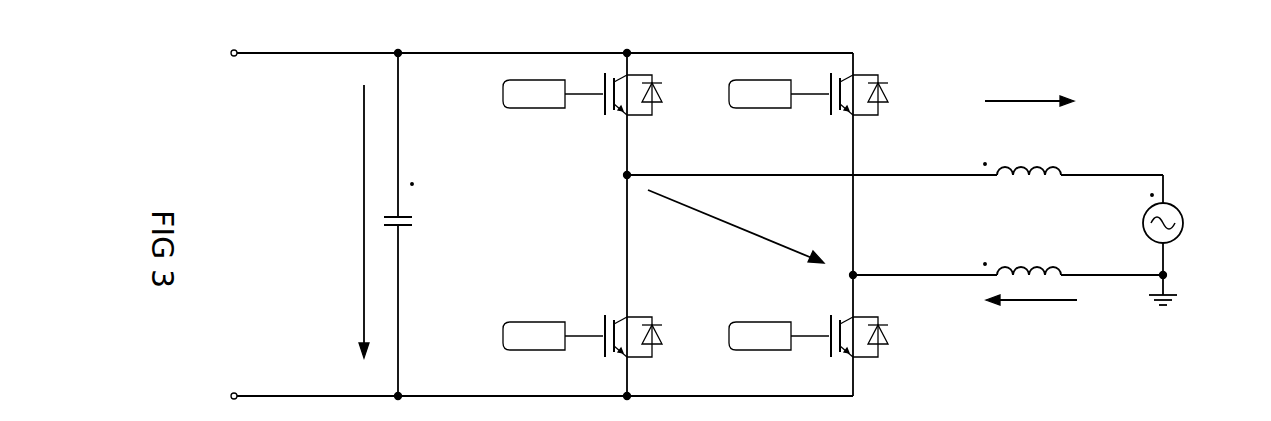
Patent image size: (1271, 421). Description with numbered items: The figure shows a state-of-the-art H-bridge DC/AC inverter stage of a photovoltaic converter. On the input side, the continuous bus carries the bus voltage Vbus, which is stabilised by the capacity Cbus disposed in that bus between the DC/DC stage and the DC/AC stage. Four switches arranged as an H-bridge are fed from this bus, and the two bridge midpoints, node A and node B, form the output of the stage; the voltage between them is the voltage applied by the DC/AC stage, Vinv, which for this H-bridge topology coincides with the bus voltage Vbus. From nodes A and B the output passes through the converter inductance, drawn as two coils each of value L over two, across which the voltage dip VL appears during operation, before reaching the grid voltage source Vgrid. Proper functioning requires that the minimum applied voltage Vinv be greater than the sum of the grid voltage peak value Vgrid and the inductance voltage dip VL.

The bus voltage Vbus is at (332, 221).
The capacity Cbus is at (432, 224).
The inverter output node A is at (793, 174).
The inverter output node B is at (924, 264).
The voltage applied by the DC/AC inverter output stage Vinv is at (736, 231).
The coil L is at (1073, 203).
The voltage dip during converter inductance VL is at (1031, 211).
The grid voltage Vgrid is at (1196, 240).